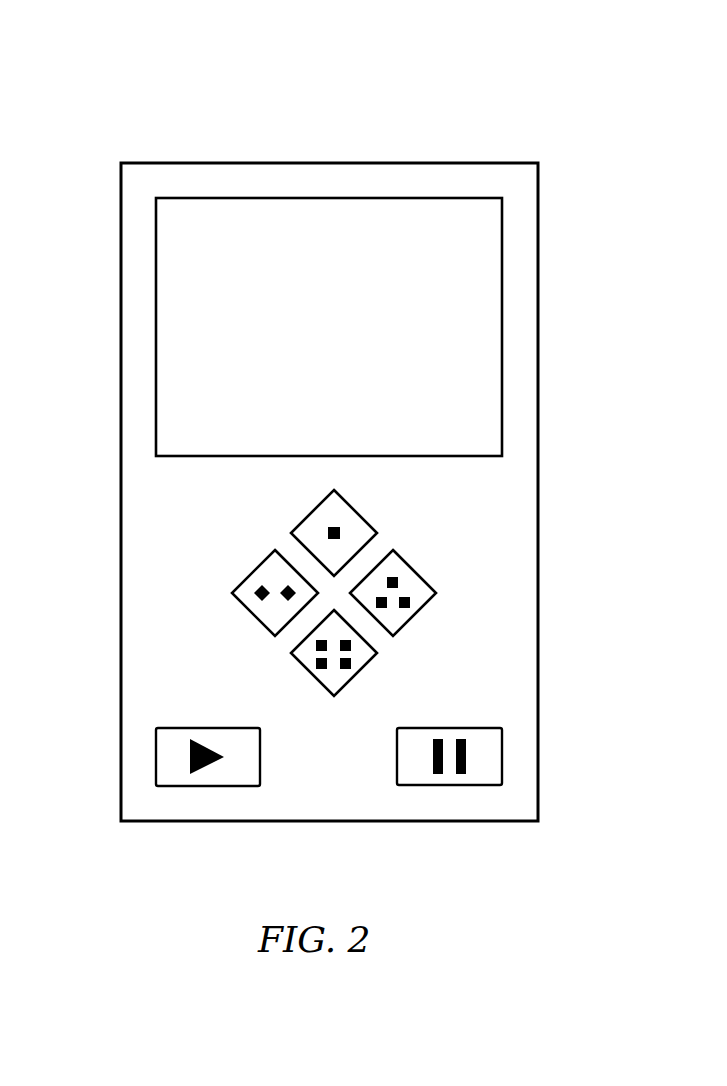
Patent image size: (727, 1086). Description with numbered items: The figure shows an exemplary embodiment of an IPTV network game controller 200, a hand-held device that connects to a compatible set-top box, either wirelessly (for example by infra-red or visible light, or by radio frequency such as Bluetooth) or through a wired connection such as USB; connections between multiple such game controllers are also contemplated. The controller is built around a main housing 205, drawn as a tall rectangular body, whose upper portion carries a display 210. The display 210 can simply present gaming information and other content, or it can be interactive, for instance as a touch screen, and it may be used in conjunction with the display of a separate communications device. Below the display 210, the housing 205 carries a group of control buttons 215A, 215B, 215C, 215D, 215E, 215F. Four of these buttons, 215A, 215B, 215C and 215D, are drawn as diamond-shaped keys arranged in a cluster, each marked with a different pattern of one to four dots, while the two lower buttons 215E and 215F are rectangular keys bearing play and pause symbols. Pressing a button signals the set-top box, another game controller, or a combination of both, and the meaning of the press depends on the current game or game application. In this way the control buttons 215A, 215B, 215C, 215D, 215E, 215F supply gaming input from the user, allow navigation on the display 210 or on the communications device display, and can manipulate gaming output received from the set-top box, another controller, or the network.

The IPTV network game controller 200 is at (92, 98).
The main housing 205 is at (120, 372).
The display 210 is at (162, 236).
The control button 215A is at (313, 503).
The control button 215B is at (246, 614).
The control button 215C is at (424, 578).
The control button 215D is at (353, 682).
The control button 215E is at (155, 758).
The control button 215F is at (502, 758).